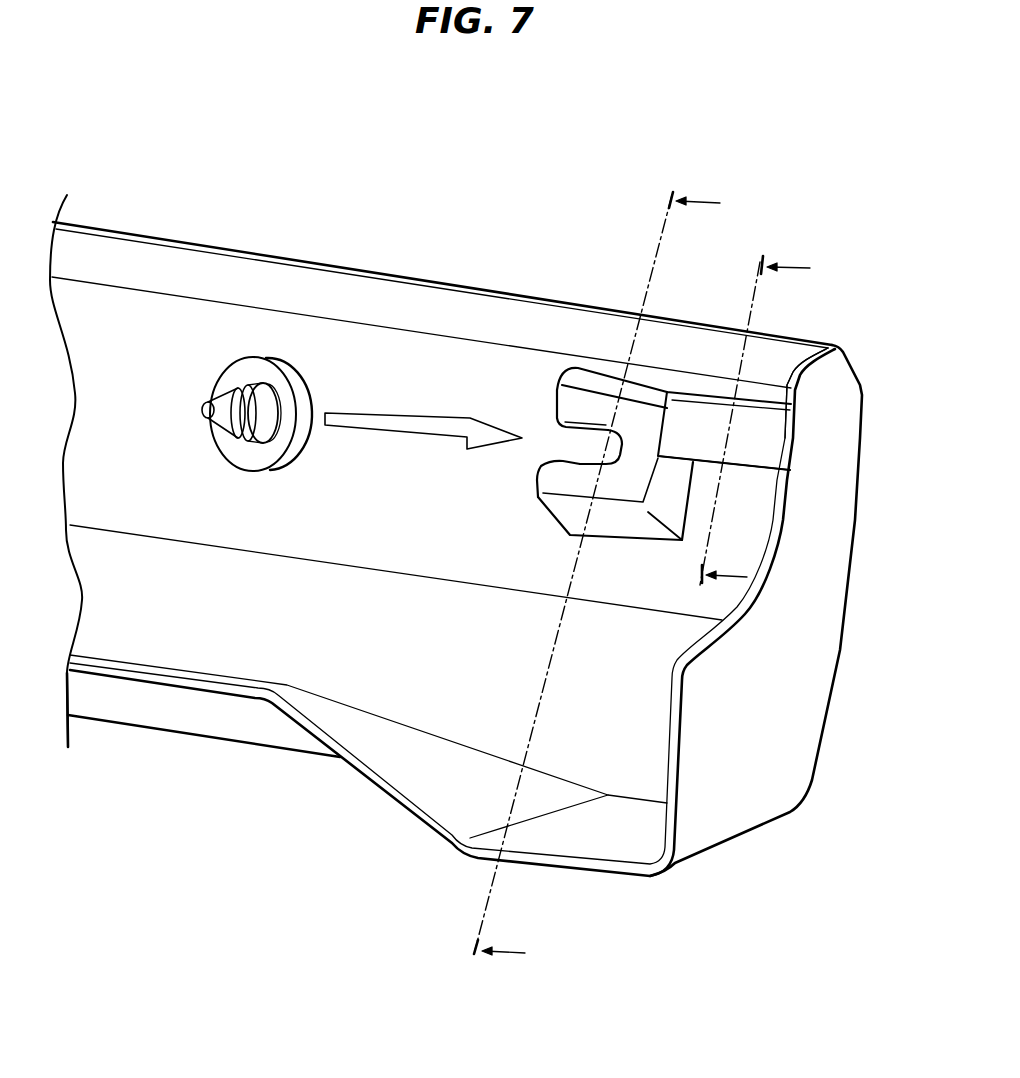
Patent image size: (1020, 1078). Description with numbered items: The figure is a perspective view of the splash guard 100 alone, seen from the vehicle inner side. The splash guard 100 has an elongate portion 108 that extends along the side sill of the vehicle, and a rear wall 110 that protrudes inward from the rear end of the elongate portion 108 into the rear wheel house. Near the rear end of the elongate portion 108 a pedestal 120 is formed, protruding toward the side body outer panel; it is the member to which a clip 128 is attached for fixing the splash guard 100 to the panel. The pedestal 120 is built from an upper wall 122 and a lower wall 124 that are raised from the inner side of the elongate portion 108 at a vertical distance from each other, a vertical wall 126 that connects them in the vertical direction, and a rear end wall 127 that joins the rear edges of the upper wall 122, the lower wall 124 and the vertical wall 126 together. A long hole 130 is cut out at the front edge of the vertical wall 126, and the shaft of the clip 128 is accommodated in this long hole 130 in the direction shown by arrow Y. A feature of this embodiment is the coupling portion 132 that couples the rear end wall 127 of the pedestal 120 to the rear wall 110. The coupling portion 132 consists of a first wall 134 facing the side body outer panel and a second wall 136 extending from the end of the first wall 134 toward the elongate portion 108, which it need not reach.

The splash guard 100 is at (540, 175).
The elongate portion 108 is at (350, 347).
The rear wall 110 is at (763, 792).
The pedestal 120 is at (558, 387).
The upper wall 122 is at (602, 383).
The lower wall 124 is at (565, 512).
The vertical wall 126 is at (555, 475).
The rear end wall 127 is at (667, 508).
The clip 128 is at (261, 466).
The long hole 130 is at (572, 437).
The coupling portion 132 is at (748, 473).
The first wall 134 is at (763, 447).
The second wall 136 is at (763, 395).
The arrow Y is at (377, 427).